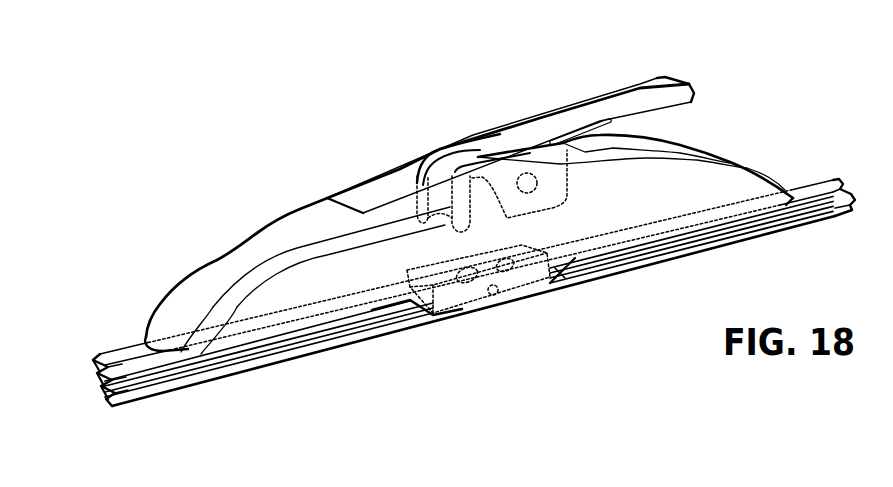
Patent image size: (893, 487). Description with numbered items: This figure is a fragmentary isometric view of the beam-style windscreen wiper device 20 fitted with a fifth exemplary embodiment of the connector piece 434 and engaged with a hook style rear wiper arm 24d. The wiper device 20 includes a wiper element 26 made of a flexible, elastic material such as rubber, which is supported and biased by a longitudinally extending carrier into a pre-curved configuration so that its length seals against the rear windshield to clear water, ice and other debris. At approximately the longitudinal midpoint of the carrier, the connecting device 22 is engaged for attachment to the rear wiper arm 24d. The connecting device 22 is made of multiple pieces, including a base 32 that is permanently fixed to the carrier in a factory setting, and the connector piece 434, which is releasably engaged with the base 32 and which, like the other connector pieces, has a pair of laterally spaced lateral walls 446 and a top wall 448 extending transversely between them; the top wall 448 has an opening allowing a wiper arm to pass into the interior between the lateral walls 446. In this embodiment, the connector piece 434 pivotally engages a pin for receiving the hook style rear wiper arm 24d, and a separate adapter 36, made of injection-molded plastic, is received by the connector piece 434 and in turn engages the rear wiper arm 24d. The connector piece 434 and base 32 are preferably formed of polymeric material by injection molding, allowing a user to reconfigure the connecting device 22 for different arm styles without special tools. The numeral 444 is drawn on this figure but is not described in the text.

The windscreen wiper device 20 is at (210, 242).
The connecting device 22 is at (310, 199).
The hook style rear wiper arm 24d is at (610, 107).
The wiper element 26 is at (373, 338).
The base 32 is at (490, 297).
The adapter 36 is at (419, 185).
The connector piece 434 is at (180, 318).
The connector base 444 is at (575, 260).
The lateral walls 446 is at (743, 190).
The top wall 448 is at (275, 228).